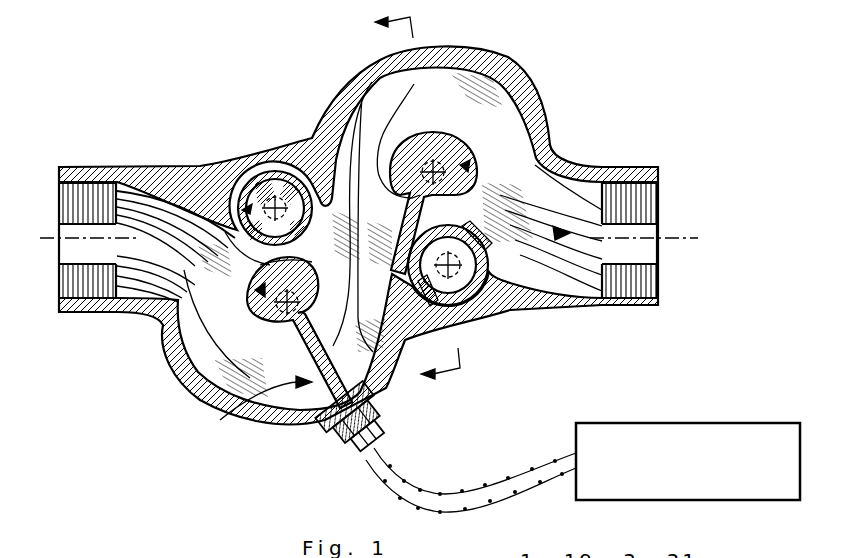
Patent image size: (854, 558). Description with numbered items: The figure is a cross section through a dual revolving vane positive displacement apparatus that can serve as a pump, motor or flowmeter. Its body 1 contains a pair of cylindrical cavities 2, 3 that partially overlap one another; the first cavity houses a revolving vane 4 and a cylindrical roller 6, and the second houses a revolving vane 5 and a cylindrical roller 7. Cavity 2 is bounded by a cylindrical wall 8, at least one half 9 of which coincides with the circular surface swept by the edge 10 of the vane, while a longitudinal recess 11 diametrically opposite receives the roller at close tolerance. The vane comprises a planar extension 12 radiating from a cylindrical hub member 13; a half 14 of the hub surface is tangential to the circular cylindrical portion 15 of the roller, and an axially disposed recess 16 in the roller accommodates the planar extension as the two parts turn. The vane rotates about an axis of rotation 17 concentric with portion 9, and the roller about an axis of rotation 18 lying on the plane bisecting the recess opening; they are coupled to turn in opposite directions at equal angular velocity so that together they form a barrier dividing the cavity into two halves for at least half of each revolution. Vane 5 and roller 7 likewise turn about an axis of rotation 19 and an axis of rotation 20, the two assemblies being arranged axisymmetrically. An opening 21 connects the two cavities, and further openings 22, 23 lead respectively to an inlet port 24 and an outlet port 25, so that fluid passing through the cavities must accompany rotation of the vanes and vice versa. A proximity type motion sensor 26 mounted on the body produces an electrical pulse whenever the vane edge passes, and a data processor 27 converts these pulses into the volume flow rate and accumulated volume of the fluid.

The body 1 is at (312, 142).
The cylindrical cavity 2 is at (215, 400).
The cylindrical cavity 3 is at (487, 100).
The revolving vane 4 is at (390, 388).
The revolving vane 5 is at (398, 122).
The cylindrical roller 6 is at (228, 215).
The cylindrical roller 7 is at (517, 263).
The cylindrical wall 8 is at (177, 357).
The circular cylindrical portion 9 is at (277, 430).
The edge of revolving vane 10 is at (305, 410).
The longitudinal recess 11 is at (255, 175).
The planar extension 12 is at (308, 410).
The cylindrical hub member 13 is at (208, 393).
The circular cylindrical portion of hub surface 14 is at (172, 340).
The circular cylindrical portion of roller surface 15 is at (313, 143).
The axially disposed recess 16 is at (235, 172).
The axis of rotation 17 is at (263, 400).
The axis of rotation 18 is at (265, 170).
The axis of rotation 19 is at (540, 145).
The axis of rotation 20 is at (467, 307).
The opening 21 is at (347, 130).
The opening 22 is at (137, 185).
The opening 23 is at (565, 168).
The inlet port 24 is at (65, 215).
The outlet port 25 is at (633, 218).
The proximity type motion sensor 26 is at (390, 425).
The data processor 27 is at (687, 423).